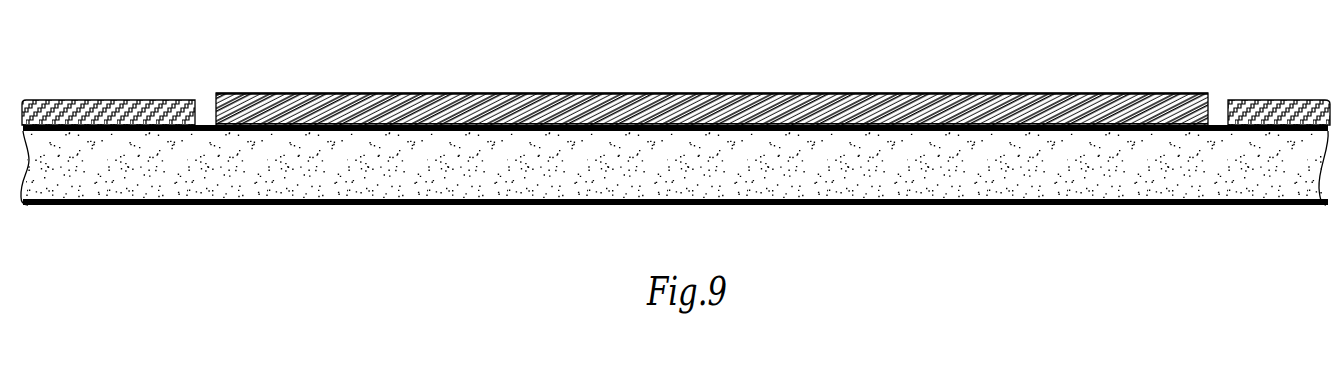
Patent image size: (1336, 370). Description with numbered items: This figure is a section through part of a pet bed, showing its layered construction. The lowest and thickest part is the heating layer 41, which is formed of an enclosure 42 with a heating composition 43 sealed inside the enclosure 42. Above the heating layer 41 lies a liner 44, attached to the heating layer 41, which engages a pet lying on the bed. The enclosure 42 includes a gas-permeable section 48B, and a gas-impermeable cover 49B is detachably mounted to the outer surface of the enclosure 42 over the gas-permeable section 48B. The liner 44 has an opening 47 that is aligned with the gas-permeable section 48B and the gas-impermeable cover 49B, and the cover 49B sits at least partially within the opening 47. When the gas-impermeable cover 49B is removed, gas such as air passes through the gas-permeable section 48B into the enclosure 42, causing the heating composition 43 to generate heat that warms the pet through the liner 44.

The heating layer 41 is at (1130, 200).
The enclosure 42 is at (1177, 132).
The heating composition 43 is at (1050, 172).
The liner 44 is at (115, 110).
The opening 47 is at (1222, 107).
The gas-permeable section 48B is at (879, 123).
The gas-impermeable cover 49B is at (713, 112).